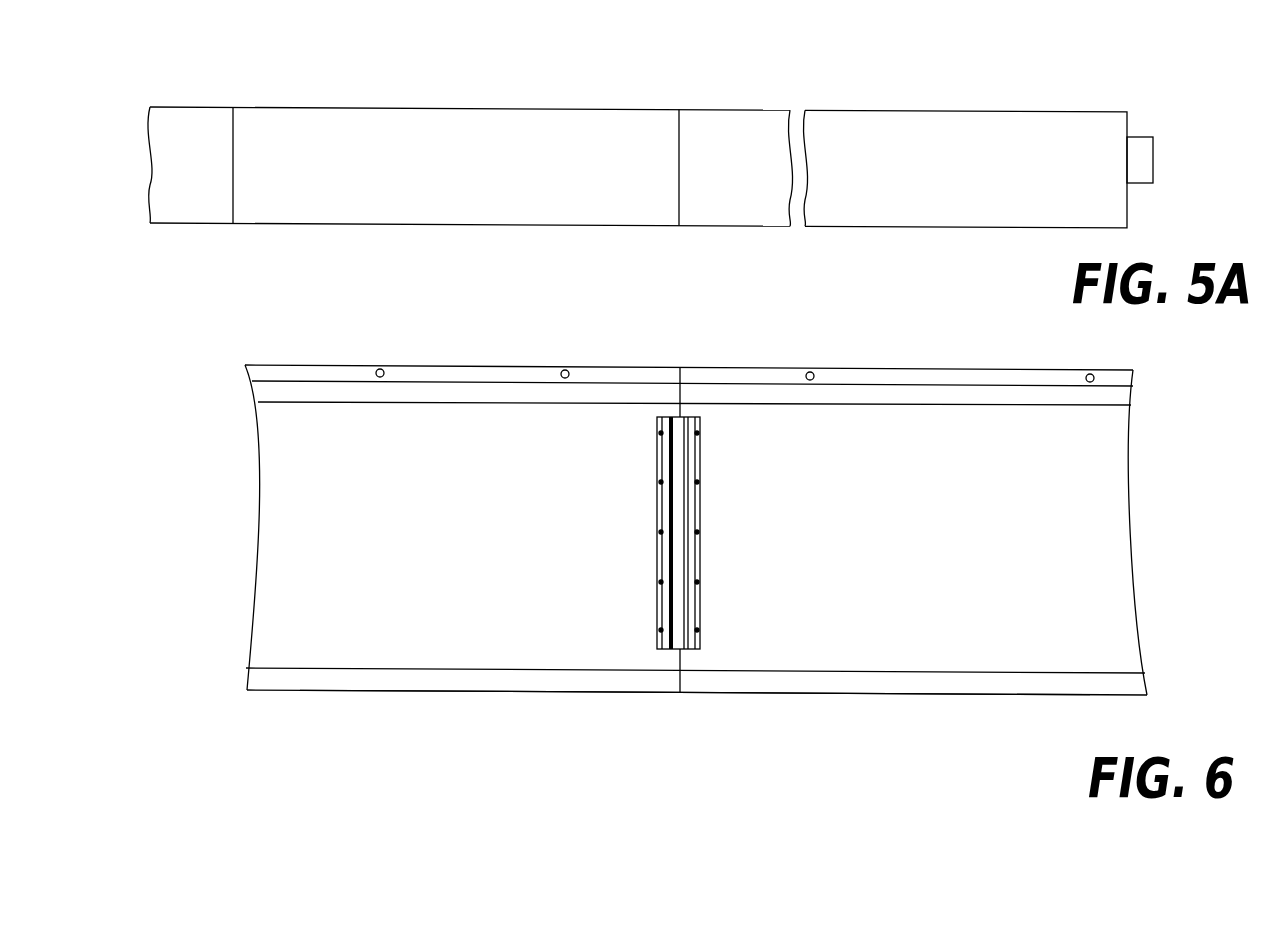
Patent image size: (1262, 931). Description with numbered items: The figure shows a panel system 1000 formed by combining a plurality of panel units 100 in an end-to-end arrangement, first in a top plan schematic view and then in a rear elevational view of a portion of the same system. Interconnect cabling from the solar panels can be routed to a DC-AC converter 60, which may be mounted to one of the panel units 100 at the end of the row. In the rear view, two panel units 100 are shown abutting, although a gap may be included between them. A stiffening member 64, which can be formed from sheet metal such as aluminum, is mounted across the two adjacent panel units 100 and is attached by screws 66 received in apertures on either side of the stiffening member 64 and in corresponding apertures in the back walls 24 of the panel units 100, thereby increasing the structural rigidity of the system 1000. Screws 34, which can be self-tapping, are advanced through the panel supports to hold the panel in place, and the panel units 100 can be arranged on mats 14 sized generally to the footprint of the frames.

In FIG. 5A, the panel system 1000 is at (953, 48).
In FIG. 5A, the panel unit 100 is at (212, 174).
In FIG. 6, the panel unit 100 is at (545, 715).
In FIG. 5A, the DC-AC converter 60 is at (1147, 160).
In FIG. 6, the back wall 24 is at (374, 595).
In FIG. 6, the screws 34 is at (382, 369).
In FIG. 6, the stiffening member 64 is at (683, 458).
In FIG. 6, the screws 66 is at (699, 483).
In FIG. 6, the mats 14 is at (420, 686).